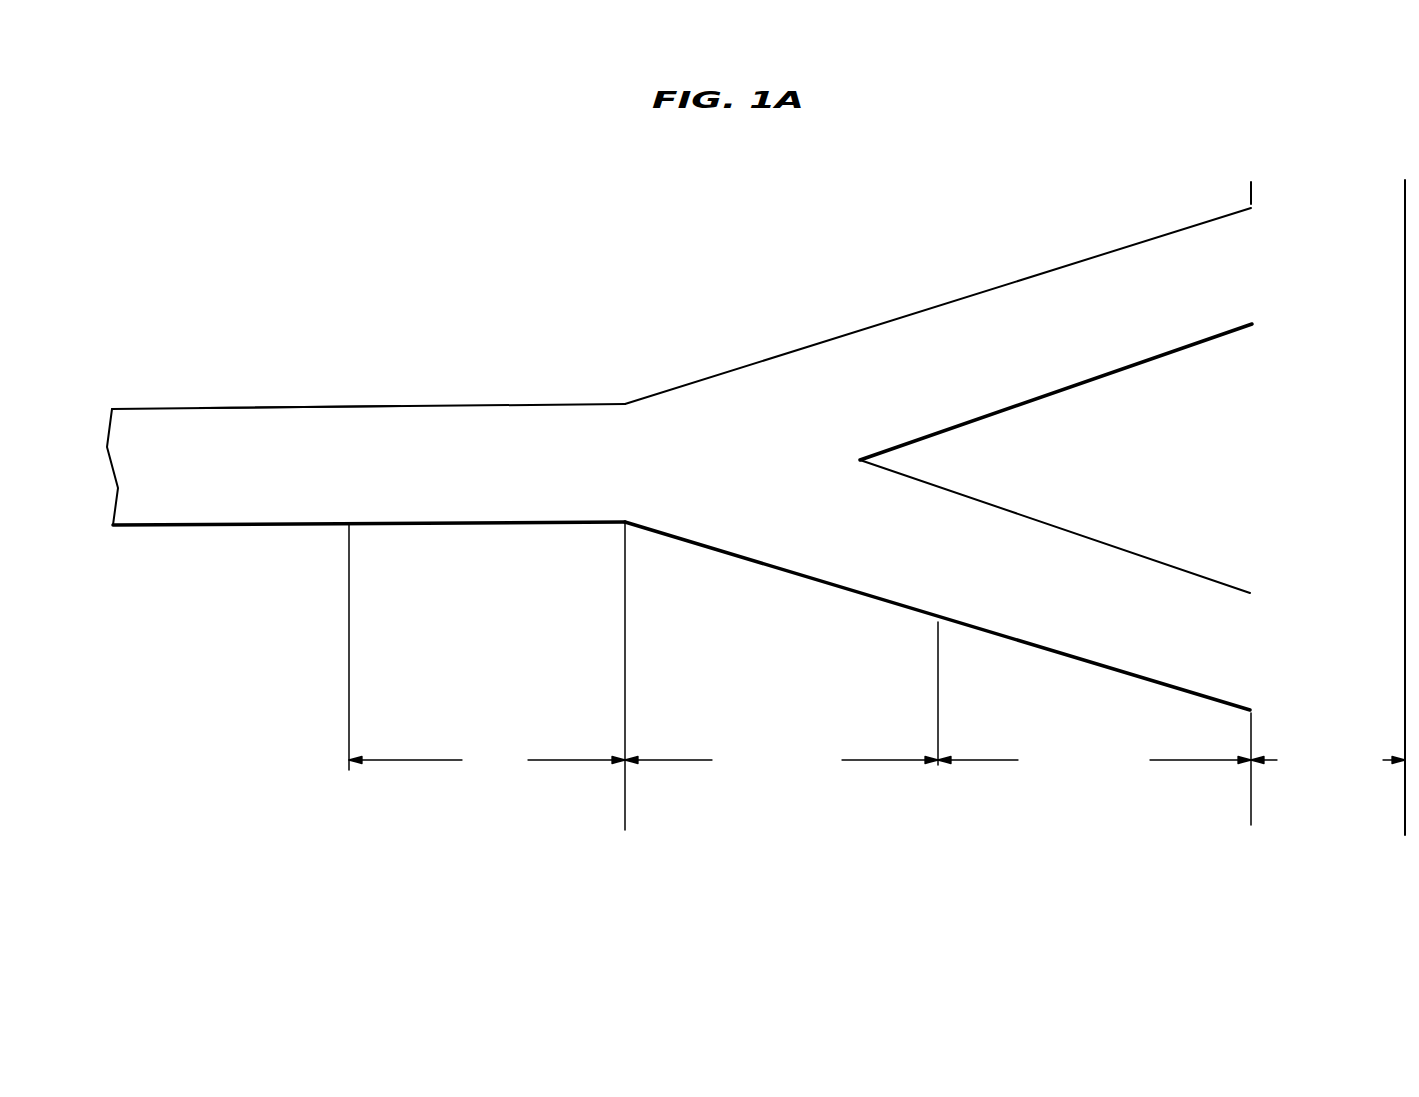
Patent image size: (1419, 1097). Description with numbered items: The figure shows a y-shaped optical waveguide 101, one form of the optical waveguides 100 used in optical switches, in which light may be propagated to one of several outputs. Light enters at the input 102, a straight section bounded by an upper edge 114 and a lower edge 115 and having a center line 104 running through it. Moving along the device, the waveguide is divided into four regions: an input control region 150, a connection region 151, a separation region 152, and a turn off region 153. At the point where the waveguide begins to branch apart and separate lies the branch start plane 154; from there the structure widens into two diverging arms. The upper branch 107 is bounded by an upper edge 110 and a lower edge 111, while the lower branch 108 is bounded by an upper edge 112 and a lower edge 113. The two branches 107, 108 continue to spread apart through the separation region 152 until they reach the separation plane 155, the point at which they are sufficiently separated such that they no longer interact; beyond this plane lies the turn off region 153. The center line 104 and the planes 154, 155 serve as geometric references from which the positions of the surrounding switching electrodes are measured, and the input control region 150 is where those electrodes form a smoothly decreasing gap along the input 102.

The optical waveguide 100 is at (756, 503).
The y-shaped optical waveguide 101 is at (306, 408).
The input 102 is at (366, 457).
The center line 104 is at (1307, 422).
The upper branch 107 is at (938, 316).
The lower branch 108 is at (937, 585).
The upper edge of upper branch 110 is at (1064, 231).
The lower edge of upper branch 111 is at (1099, 401).
The upper edge of lower branch 112 is at (1109, 513).
The lower edge of lower branch 113 is at (1071, 676).
The upper edge of input 114 is at (468, 380).
The lower edge of input 115 is at (476, 546).
The input control region 150 is at (487, 691).
The connection region 151 is at (781, 787).
The separation region 152 is at (1094, 725).
The turn off region 153 is at (1328, 784).
The branch start plane 154 is at (627, 724).
The separation plane 155 is at (1251, 818).